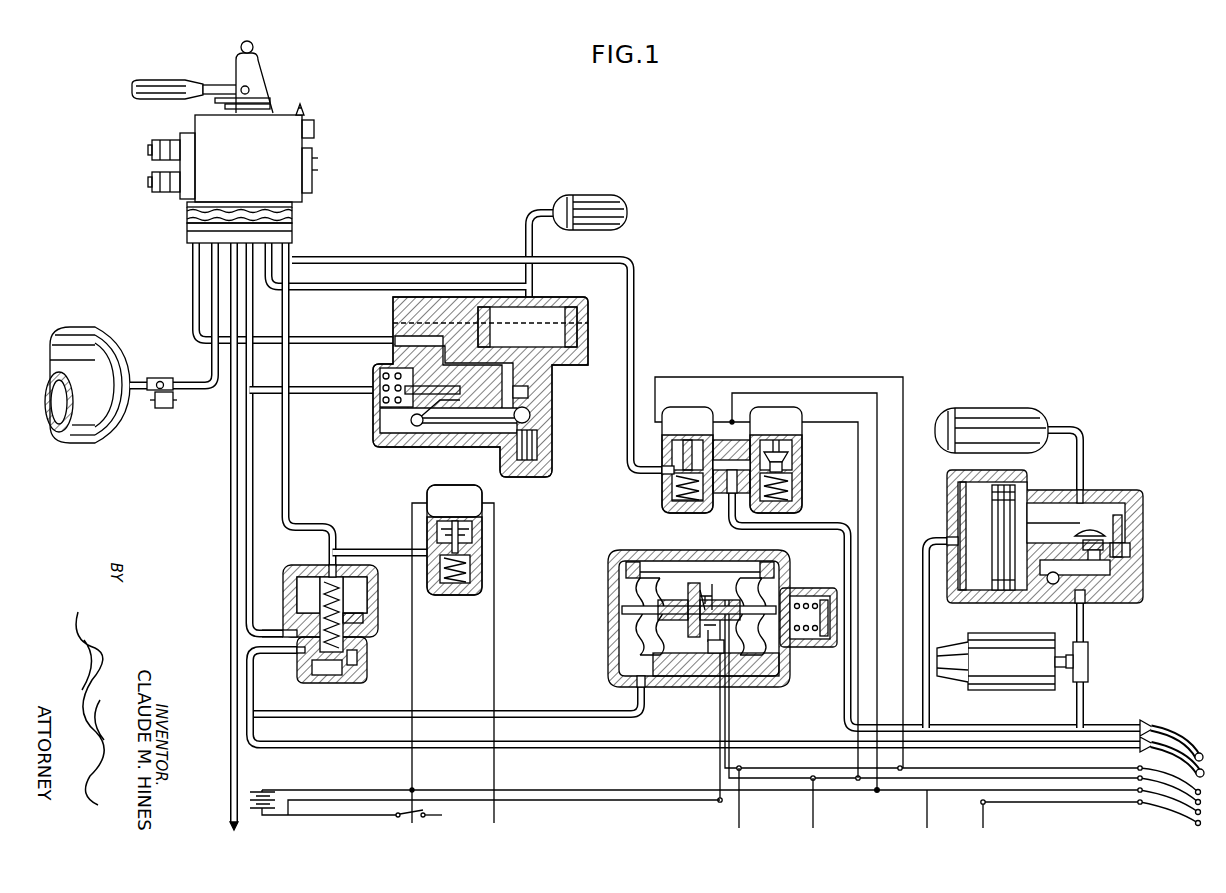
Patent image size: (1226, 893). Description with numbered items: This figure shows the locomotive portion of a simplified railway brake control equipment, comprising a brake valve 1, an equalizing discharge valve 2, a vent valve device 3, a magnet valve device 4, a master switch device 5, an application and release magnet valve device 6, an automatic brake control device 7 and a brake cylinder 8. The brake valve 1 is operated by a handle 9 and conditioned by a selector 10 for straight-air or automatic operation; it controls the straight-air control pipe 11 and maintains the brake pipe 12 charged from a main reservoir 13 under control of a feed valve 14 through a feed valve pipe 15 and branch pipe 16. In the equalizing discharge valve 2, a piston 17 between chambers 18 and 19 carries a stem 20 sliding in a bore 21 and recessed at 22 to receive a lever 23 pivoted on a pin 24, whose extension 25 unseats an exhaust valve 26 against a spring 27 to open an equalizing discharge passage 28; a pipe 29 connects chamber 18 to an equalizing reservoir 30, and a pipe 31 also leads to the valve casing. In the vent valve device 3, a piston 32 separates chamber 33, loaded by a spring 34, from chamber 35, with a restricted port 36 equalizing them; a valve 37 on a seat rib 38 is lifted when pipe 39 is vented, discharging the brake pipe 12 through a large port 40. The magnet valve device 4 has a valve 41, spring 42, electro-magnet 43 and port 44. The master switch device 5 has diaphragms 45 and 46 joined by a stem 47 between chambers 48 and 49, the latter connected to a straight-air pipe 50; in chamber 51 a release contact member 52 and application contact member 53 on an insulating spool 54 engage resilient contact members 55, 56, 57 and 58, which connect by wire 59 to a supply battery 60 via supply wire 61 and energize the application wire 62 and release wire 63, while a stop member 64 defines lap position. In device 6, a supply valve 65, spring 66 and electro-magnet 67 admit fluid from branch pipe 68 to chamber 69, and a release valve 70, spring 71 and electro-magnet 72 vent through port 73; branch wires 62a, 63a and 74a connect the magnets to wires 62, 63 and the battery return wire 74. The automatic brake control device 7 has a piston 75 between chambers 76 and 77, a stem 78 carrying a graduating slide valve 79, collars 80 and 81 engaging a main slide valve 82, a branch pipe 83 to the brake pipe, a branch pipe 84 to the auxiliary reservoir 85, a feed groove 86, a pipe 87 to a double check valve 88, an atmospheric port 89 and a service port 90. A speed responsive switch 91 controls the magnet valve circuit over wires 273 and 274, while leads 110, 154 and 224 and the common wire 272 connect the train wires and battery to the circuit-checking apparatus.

The brake valve 1 is at (304, 112).
The equalizing discharge valve 2 is at (473, 374).
The vent valve device 3 is at (329, 629).
The magnet valve device 4 is at (458, 536).
The master switch device 5 is at (706, 615).
The application and release magnet valve device 6 is at (728, 447).
The automatic brake control device 7 is at (1046, 537).
The brake cylinder 8 is at (1005, 686).
The handle 9 is at (143, 95).
The selector 10 is at (312, 178).
The straight-air control pipe 11 is at (232, 463).
The brake pipe 12 is at (403, 744).
The main reservoir 13 is at (110, 346).
The feed valve 14 is at (153, 378).
The feed valve pipe 15 is at (212, 273).
The branch pipe 16 is at (249, 442).
The piston 17 is at (588, 358).
The chamber 18 is at (560, 331).
The chamber 19 is at (513, 373).
The stem 20 is at (530, 392).
The bore 21 is at (545, 442).
The recess 22 is at (531, 415).
The lever 23 is at (487, 420).
The pin 24 is at (410, 425).
The extension 25 is at (433, 380).
The exhaust valve 26 is at (458, 402).
The spring 27 is at (395, 396).
The equalizing discharge passage 28 is at (336, 338).
The pipe 29 is at (412, 288).
The equalizing reservoir 30 is at (585, 198).
The conduit 31 is at (335, 388).
The piston 32 is at (283, 630).
The chamber 33 is at (310, 595).
The spring 34 is at (330, 568).
The chamber 35 is at (367, 625).
The restricted port 36 is at (360, 601).
The valve 37 is at (357, 660).
The seat rib 38 is at (300, 671).
The pipe 39 is at (322, 528).
The large port 40 is at (338, 677).
The valve 41 is at (475, 537).
The spring 42 is at (470, 569).
The electro-magnet 43 is at (463, 507).
The port 44 is at (478, 527).
The diaphragm 45 is at (648, 577).
The diaphragm 46 is at (748, 577).
The stem 47 is at (685, 606).
The chamber 48 is at (625, 588).
The chamber 49 is at (765, 651).
The straight-air pipe 50 is at (848, 704).
The chamber 51 is at (655, 560).
The release contact member 52 is at (708, 632).
The application contact member 53 is at (700, 592).
The insulating spool 54 is at (690, 625).
The resilient contact member 55 is at (712, 683).
The resilient contact member 56 is at (662, 683).
The resilient contact member 57 is at (712, 584).
The resilient contact member 58 is at (703, 592).
The wire 59 is at (718, 729).
The supply battery 60 is at (264, 790).
The supply wire 61 is at (597, 802).
The application control wire 62 is at (728, 698).
The branch wire 62a is at (818, 377).
The release control wire 63 is at (730, 719).
The branch wire 63a is at (858, 466).
The spring supported stop member 64 is at (790, 598).
The supply valve 65 is at (672, 476).
The spring 66 is at (672, 497).
The electro-magnet 67 is at (690, 410).
The branch pipe 68 is at (400, 258).
The chamber 69 is at (683, 446).
The release valve 70 is at (790, 460).
The spring 71 is at (790, 484).
The electro-magnet 72 is at (790, 412).
The port 73 is at (790, 446).
The battery return wire 74 is at (578, 790).
The branch wire 74a is at (877, 396).
The piston 75 is at (1005, 509).
The chamber 76 is at (970, 527).
The chamber 77 is at (1040, 503).
The stem 78 is at (1056, 536).
The graduating slide valve 79 is at (1122, 548).
The collar 80 is at (1025, 524).
The collar 81 is at (1113, 525).
The main slide valve 82 is at (1035, 582).
The branch pipe 83 is at (928, 630).
The branch pipe 84 is at (1082, 452).
The auxiliary reservoir 85 is at (1018, 415).
The feed groove 86 is at (993, 600).
The pipe 87 is at (1083, 629).
The double check valve 88 is at (1088, 653).
The atmospheric port 89 is at (1053, 590).
The service port 90 is at (1125, 565).
The speed responsive switch 91 is at (400, 817).
The lead 110 is at (742, 818).
The lead 154 is at (816, 818).
The lead 224 is at (988, 818).
The common wire 272 is at (930, 818).
The wire 273 is at (494, 818).
The wire 274 is at (442, 808).